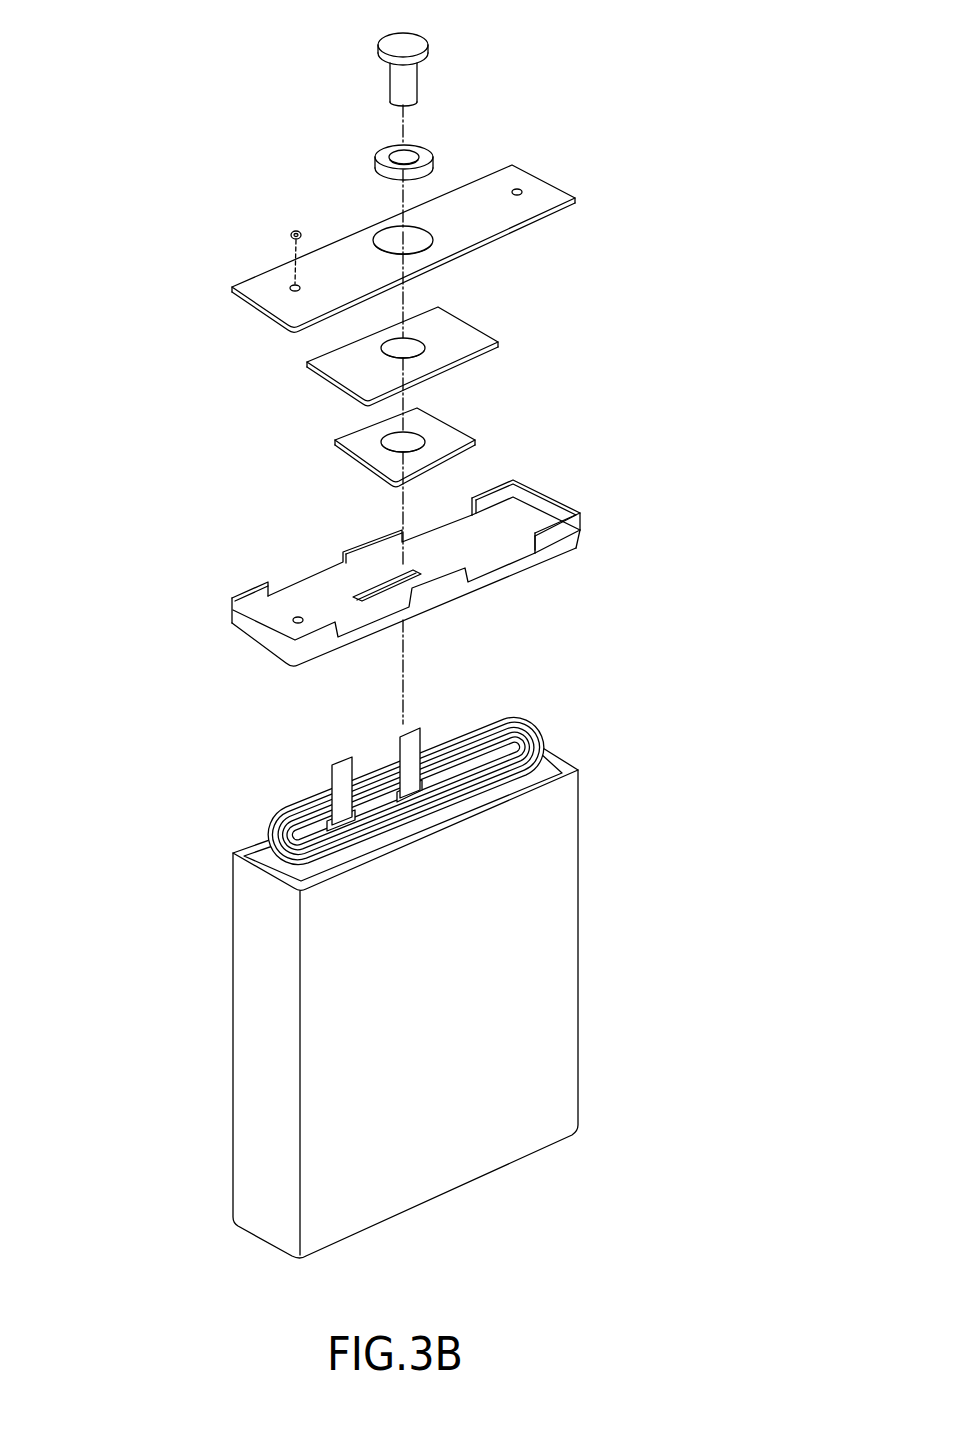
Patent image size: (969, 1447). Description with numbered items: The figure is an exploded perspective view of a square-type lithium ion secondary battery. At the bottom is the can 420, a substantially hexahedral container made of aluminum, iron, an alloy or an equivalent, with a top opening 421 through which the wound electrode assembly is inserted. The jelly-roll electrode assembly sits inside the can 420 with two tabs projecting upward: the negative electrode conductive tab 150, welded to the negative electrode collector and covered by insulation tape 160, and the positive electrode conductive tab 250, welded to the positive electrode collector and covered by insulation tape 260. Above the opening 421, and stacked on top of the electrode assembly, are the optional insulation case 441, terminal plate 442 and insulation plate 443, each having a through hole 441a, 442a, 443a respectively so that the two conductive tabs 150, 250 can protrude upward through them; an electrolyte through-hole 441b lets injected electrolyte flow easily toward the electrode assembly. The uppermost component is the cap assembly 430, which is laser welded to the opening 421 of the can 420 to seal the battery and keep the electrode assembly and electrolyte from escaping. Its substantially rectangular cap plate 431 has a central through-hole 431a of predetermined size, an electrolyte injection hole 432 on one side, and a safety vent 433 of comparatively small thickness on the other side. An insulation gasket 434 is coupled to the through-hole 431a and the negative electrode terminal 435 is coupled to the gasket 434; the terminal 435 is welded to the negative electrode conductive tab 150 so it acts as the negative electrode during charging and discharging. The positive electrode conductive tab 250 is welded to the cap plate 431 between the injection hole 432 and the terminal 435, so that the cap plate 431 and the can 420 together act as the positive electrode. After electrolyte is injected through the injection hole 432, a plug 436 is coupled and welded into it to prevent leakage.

The cap assembly 430 is at (192, 275).
The cap plate 431 is at (488, 183).
The through-hole 431a is at (385, 233).
The electrolyte injection hole 432 is at (291, 284).
The safety vent 433 is at (522, 188).
The insulation gasket 434 is at (383, 156).
The negative electrode terminal 435 is at (392, 42).
The plug 436 is at (291, 232).
The insulation case 441 is at (250, 633).
The through hole 441a is at (397, 577).
The electrolyte through-hole 441b is at (296, 618).
The terminal plate 442 is at (362, 445).
The through hole 442a is at (420, 436).
The insulation plate 443 is at (320, 367).
The through hole 443a is at (420, 342).
The can 420 is at (560, 942).
The top opening 421 is at (550, 768).
The negative electrode conductive tab 150 is at (393, 757).
The insulation tape 160 is at (438, 782).
The positive electrode conductive tab 250 is at (328, 788).
The insulation tape 260 is at (294, 818).